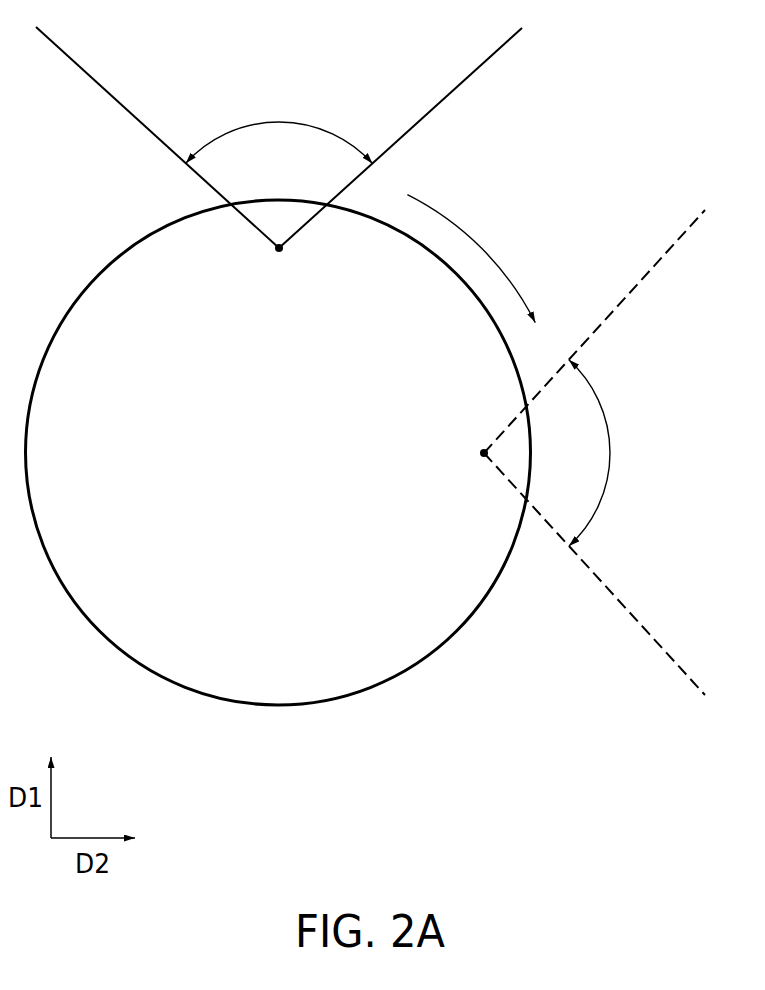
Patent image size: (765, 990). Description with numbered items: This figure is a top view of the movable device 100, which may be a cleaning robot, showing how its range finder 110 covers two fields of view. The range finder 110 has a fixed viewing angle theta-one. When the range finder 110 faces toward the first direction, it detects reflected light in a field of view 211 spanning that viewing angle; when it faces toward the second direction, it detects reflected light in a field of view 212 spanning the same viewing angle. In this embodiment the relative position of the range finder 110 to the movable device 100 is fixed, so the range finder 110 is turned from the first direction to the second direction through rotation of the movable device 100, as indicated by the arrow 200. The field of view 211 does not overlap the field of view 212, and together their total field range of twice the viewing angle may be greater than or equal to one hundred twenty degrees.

The movable device 100 is at (301, 467).
The range finder 110 is at (279, 252).
The arrow 200 is at (471, 259).
The field of view 211 is at (304, 53).
The field of view 212 is at (727, 468).